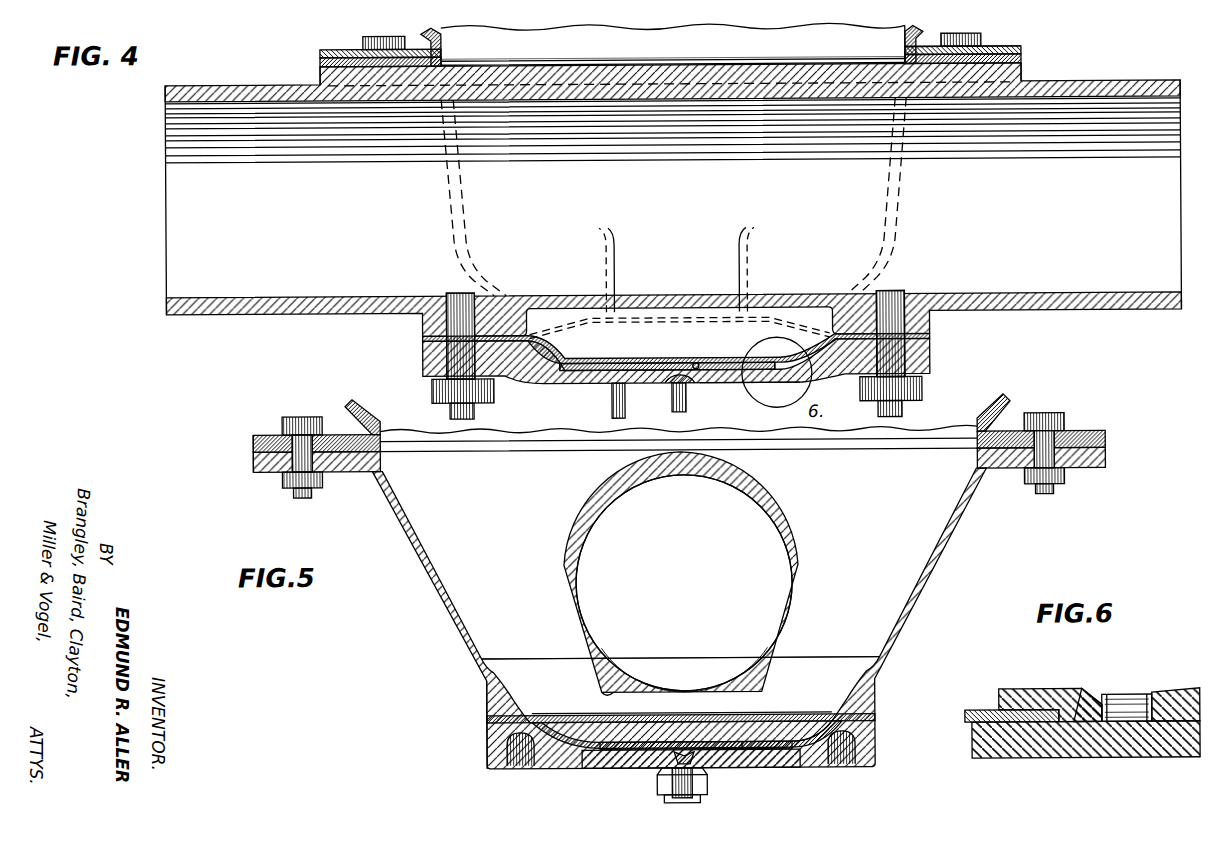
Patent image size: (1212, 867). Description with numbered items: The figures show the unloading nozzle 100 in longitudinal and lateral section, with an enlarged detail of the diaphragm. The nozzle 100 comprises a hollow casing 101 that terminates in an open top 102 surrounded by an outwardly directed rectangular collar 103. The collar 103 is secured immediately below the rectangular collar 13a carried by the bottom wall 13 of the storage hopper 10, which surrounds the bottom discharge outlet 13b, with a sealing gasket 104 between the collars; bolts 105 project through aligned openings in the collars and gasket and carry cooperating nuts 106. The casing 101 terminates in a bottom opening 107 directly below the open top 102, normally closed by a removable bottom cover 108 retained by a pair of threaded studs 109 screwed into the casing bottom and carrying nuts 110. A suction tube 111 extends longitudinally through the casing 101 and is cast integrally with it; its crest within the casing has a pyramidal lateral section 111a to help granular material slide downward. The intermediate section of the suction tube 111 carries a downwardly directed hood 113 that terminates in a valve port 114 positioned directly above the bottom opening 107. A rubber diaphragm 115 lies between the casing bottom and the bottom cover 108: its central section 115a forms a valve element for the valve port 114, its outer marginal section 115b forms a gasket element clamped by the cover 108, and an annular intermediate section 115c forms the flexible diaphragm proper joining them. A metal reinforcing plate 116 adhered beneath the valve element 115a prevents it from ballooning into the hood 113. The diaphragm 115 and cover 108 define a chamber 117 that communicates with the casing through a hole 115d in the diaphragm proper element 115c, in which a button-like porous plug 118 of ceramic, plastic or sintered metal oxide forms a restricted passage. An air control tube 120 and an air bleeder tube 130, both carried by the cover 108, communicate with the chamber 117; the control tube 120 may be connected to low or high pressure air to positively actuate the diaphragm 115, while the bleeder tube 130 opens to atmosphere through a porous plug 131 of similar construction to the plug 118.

In FIG. 4, the storage hopper 10 is at (876, 30).
In FIG. 5, the storage hopper 10 is at (1004, 404).
In FIG. 4, the bottom wall 13 is at (545, 30).
In FIG. 5, the bottom wall 13 is at (348, 400).
In FIG. 4, the rectangular collar 13a is at (322, 52).
In FIG. 5, the rectangular collar 13a is at (260, 433).
In FIG. 4, the bottom discharge outlet 13b is at (688, 54).
In FIG. 5, the bottom discharge outlet 13b is at (505, 430).
In FIG. 4, the nozzle 100 is at (268, 322).
In FIG. 5, the nozzle 100 is at (420, 598).
In FIG. 4, the hollow casing 101 is at (900, 212).
In FIG. 5, the hollow casing 101 is at (945, 540).
In FIG. 5, the open top 102 is at (420, 460).
In FIG. 4, the rectangular collar 103 is at (1030, 70).
In FIG. 5, the rectangular collar 103 is at (253, 462).
In FIG. 4, the sealing gasket 104 is at (1030, 58).
In FIG. 5, the sealing gasket 104 is at (253, 443).
In FIG. 4, the bolts 105 is at (983, 42).
In FIG. 5, the bolts 105 is at (300, 415).
In FIG. 5, the nuts 106 is at (282, 486).
In FIG. 5, the bottom opening 107 is at (803, 712).
In FIG. 4, the bottom cover 108 is at (568, 385).
In FIG. 5, the bottom cover 108 is at (792, 768).
In FIG. 6, the bottom cover 108 is at (1042, 760).
In FIG. 4, the threaded studs 109 is at (445, 350).
In FIG. 5, the threaded studs 109 is at (698, 805).
In FIG. 4, the nuts 110 is at (434, 392).
In FIG. 5, the nuts 110 is at (706, 788).
In FIG. 4, the suction tube 111 is at (182, 103).
In FIG. 5, the suction tube 111 is at (756, 520).
In FIG. 4, the pyramidal crest 111a is at (700, 395).
In FIG. 4, the hood 113 is at (617, 272).
In FIG. 5, the hood 113 is at (590, 680).
In FIG. 4, the valve port 114 is at (612, 320).
In FIG. 5, the valve port 114 is at (618, 690).
In FIG. 4, the diaphragm 115 is at (534, 356).
In FIG. 5, the diaphragm 115 is at (540, 735).
In FIG. 4, the valve element 115a is at (612, 378).
In FIG. 5, the valve element 115a is at (718, 744).
In FIG. 6, the valve element 115a is at (1017, 691).
In FIG. 5, the gasket element 115b is at (485, 719).
In FIG. 5, the diaphragm proper element 115c is at (796, 740).
In FIG. 6, the diaphragm proper element 115c is at (1178, 692).
In FIG. 6, the hole 115d is at (1130, 697).
In FIG. 4, the metal reinforcing plate 116 is at (655, 364).
In FIG. 5, the metal reinforcing plate 116 is at (628, 744).
In FIG. 6, the metal reinforcing plate 116 is at (966, 712).
In FIG. 5, the chamber 117 is at (580, 757).
In FIG. 6, the chamber 117 is at (1088, 693).
In FIG. 6, the porous plug 118 is at (1118, 724).
In FIG. 4, the air control tube 120 is at (612, 412).
In FIG. 4, the air bleeder tube 130 is at (672, 408).
In FIG. 5, the air bleeder tube 130 is at (670, 790).
In FIG. 4, the porous plug 131 is at (703, 362).
In FIG. 5, the porous plug 131 is at (683, 752).